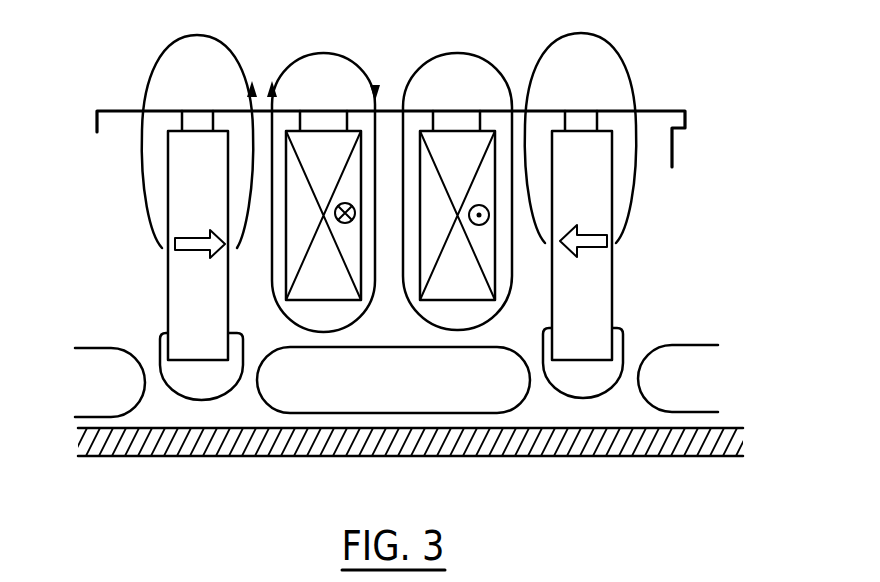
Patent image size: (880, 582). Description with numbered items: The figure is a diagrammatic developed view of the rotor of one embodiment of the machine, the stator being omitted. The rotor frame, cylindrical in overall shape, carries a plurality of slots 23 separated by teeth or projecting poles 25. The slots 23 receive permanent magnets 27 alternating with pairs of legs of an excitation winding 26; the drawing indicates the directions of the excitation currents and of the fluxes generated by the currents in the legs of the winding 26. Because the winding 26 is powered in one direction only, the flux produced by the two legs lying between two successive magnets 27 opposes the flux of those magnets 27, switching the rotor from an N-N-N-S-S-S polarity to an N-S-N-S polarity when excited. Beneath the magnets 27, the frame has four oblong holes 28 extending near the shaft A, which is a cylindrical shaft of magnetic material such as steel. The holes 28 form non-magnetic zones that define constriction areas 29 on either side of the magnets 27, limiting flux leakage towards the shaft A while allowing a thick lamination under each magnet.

The slots 23 is at (366, 308).
The projecting poles 25 is at (658, 115).
The excitation winding 26 is at (320, 152).
The permanent magnets 27 is at (188, 298).
The oblong holes 28 is at (333, 393).
The constriction areas 29 is at (533, 357).
The shaft A is at (715, 437).